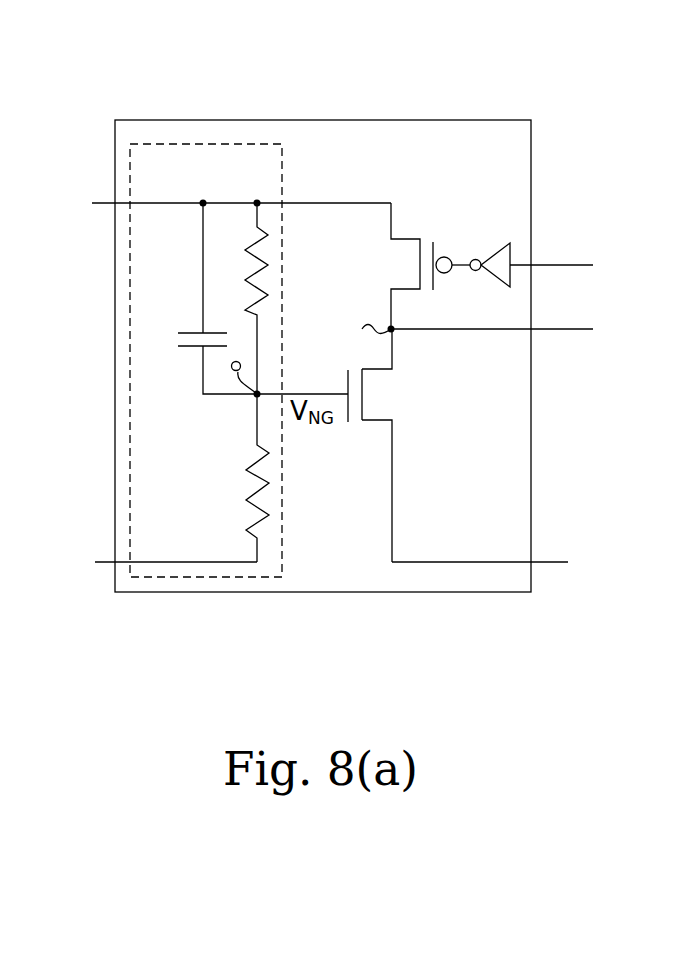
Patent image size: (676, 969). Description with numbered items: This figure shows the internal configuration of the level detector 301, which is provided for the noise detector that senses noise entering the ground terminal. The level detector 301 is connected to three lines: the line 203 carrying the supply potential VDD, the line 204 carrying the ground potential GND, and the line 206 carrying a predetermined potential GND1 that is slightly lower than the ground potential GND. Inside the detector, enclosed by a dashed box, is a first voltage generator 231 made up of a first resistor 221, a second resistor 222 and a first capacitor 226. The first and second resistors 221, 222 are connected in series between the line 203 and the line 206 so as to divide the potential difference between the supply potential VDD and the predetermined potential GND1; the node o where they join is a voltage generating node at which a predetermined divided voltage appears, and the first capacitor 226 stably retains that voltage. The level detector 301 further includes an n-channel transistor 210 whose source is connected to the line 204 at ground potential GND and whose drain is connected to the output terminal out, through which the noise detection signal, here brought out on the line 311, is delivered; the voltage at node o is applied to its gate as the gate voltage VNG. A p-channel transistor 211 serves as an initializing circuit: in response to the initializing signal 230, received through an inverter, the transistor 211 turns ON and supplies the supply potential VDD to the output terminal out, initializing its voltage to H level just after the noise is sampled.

The level detector 301 is at (320, 118).
The first voltage generator 231 is at (220, 578).
The line with supply potential VDD 203 is at (148, 203).
The first capacitor 226 is at (192, 329).
The first resistor 221 is at (262, 271).
The second resistor 222 is at (262, 489).
The line with predetermined potential GND1 206 is at (172, 562).
The n-channel transistor 210 is at (375, 372).
The p-channel transistor 211 is at (402, 240).
The initializing signal 230 is at (555, 265).
The output terminal 311 is at (555, 329).
The line with ground potential GND 204 is at (428, 562).